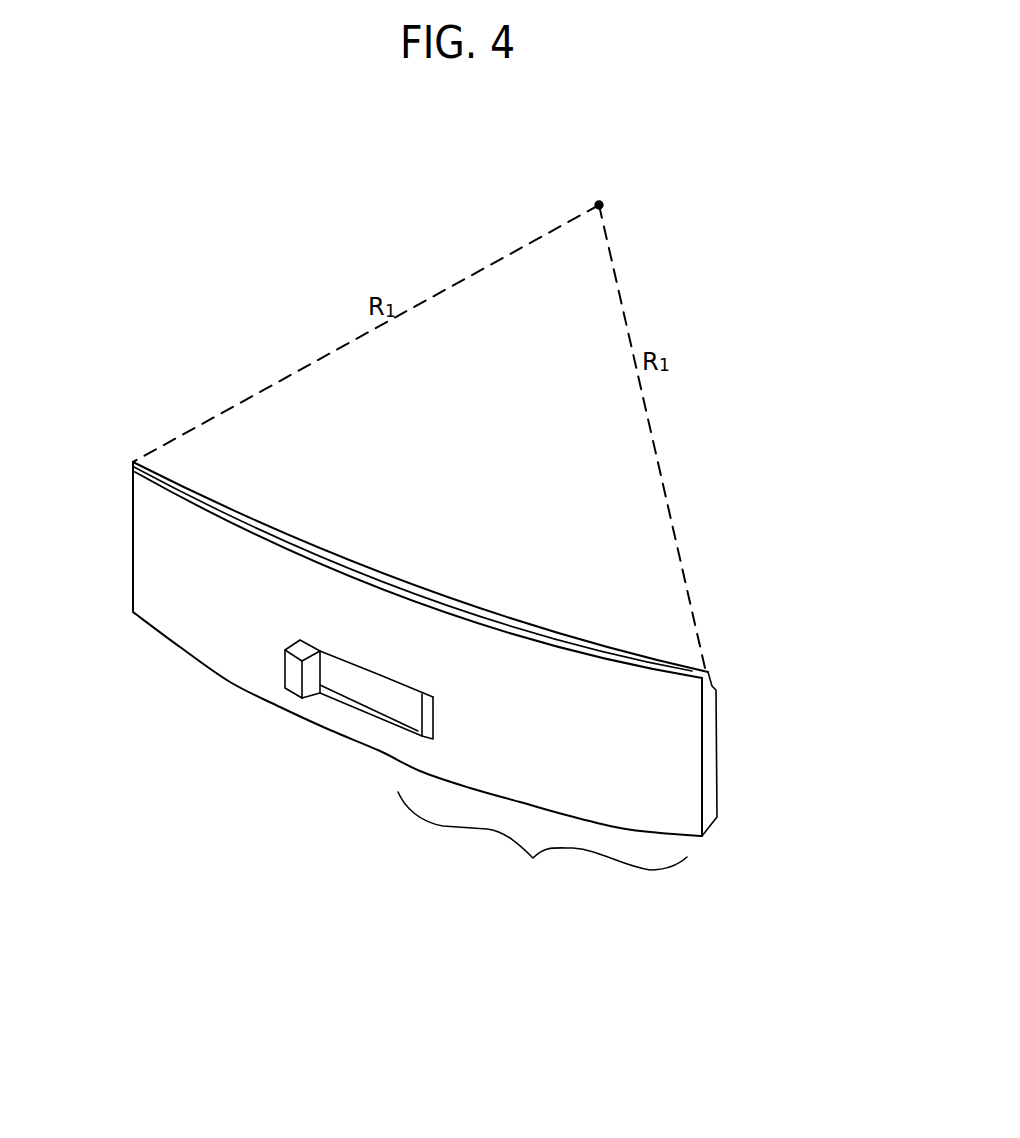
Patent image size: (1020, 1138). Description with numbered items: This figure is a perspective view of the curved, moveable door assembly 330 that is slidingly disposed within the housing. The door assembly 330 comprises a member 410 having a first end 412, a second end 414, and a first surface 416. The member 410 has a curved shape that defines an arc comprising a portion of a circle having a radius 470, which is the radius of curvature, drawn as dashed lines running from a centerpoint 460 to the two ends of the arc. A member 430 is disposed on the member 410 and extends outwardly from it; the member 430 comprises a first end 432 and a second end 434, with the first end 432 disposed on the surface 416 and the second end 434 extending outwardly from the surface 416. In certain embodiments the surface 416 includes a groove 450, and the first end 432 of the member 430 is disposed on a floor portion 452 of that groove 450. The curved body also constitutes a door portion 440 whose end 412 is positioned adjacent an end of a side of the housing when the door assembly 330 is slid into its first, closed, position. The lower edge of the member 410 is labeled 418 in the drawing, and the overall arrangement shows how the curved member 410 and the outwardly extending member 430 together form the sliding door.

The moveable door assembly 330 is at (323, 875).
The member 410 is at (421, 685).
The first end 412 is at (717, 716).
The second end 414 is at (133, 587).
The first surface 416 is at (597, 675).
The bottom edge 418 is at (690, 840).
The member 430 is at (345, 669).
The first end 432 is at (307, 683).
The second end 434 is at (285, 675).
The door portion 440 is at (542, 844).
The groove 450 is at (382, 675).
The floor portion 452 is at (338, 660).
The centerpoint 460 is at (603, 203).
The radius 470 is at (279, 378).